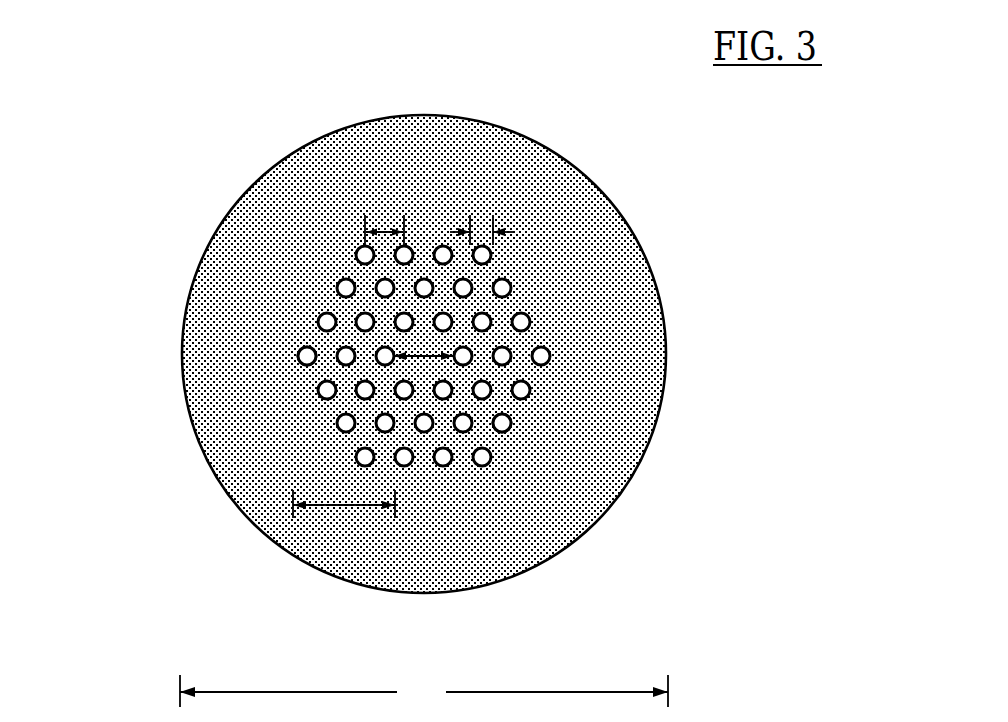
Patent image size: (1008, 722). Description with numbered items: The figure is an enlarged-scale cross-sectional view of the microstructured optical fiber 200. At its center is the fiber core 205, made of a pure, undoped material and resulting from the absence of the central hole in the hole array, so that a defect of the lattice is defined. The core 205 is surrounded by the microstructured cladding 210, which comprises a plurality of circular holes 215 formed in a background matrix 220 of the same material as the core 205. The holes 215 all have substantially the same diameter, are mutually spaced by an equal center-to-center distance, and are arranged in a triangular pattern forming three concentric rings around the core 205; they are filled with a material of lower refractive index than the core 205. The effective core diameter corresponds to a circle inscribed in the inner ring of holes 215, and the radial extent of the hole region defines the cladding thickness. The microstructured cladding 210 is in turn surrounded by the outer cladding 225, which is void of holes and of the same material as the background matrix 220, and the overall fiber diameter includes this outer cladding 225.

The optical fiber 200 is at (385, 383).
The fiber core 205 is at (428, 368).
The microstructured cladding 210 is at (419, 214).
The holes 215 is at (290, 363).
The background matrix 220 is at (520, 420).
The outer cladding 225 is at (220, 322).